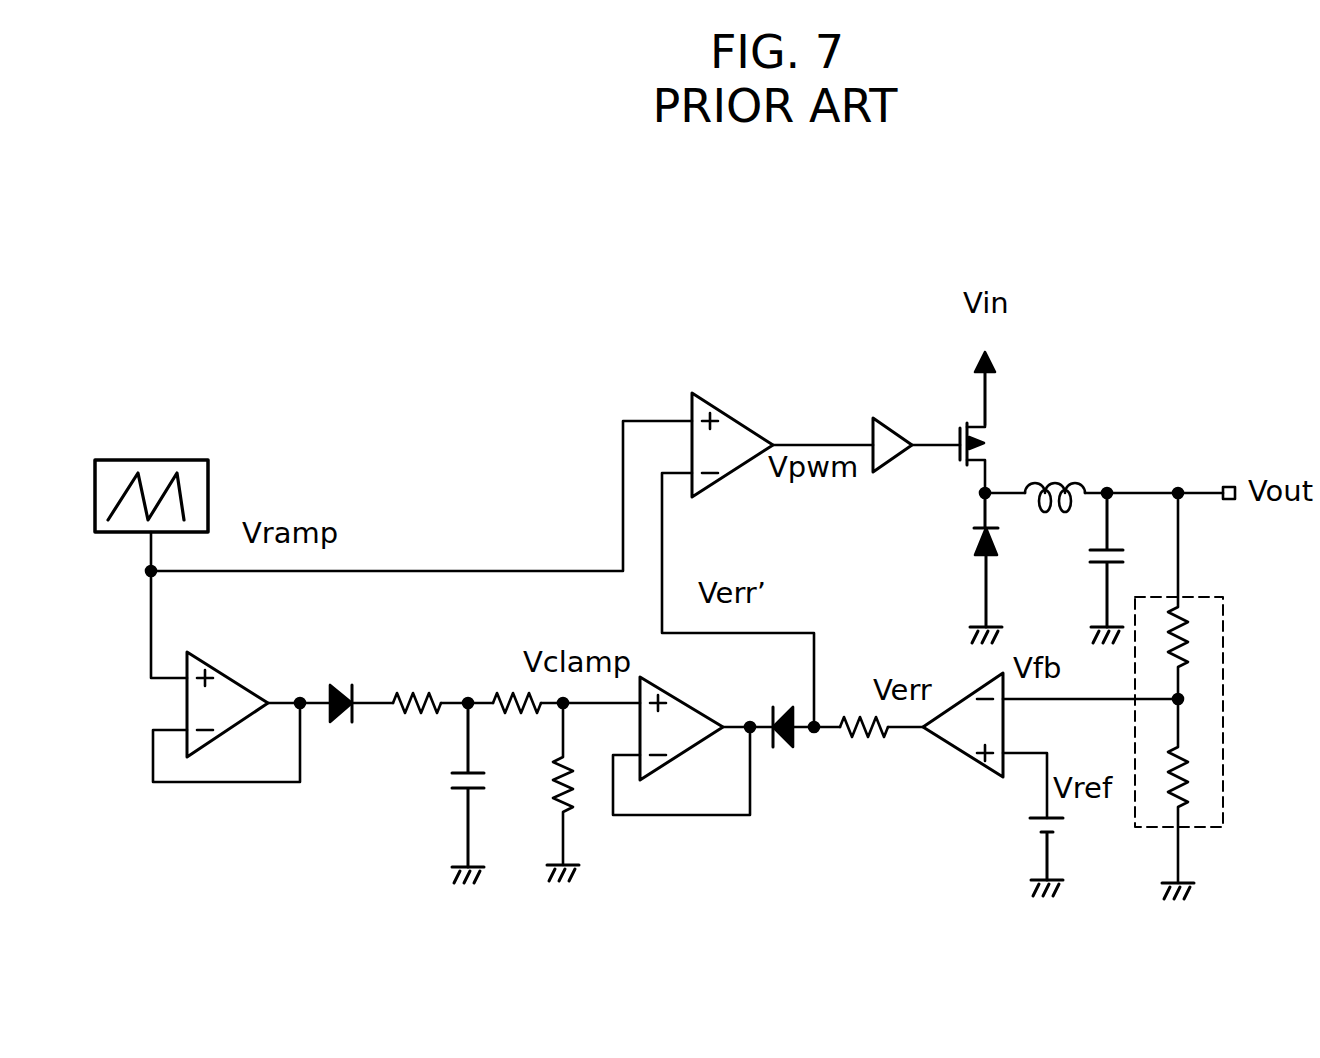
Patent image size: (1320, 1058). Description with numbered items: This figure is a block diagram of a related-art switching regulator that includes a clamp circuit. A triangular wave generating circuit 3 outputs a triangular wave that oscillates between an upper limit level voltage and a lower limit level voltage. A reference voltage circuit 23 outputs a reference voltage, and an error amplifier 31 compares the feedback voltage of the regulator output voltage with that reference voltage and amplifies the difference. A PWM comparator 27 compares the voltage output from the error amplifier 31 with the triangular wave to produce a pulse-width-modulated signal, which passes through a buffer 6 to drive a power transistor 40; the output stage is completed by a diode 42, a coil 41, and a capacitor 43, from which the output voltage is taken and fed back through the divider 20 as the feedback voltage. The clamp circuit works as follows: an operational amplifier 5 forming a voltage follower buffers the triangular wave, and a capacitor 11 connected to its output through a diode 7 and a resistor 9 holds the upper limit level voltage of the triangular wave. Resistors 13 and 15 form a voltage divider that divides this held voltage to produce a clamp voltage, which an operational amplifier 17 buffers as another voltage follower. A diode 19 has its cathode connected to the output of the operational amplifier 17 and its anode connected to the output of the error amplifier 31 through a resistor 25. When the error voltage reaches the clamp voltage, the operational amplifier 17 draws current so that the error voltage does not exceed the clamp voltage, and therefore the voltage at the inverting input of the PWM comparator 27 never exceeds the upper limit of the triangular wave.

The triangular wave generating circuit 3 is at (188, 460).
The operational amplifier 5 is at (237, 676).
The diode 7 is at (354, 682).
The resistor 9 is at (422, 725).
The capacitor 11 is at (455, 798).
The resistor 13 is at (503, 678).
The resistor 15 is at (570, 812).
The operational amplifier 17 is at (672, 768).
The diode 19 is at (780, 740).
The resistor 25 is at (858, 738).
The error amplifier 31 is at (965, 760).
The reference voltage circuit 23 is at (1030, 832).
The PWM comparator 27 is at (738, 405).
The buffer 6 is at (890, 418).
The power transistor 40 is at (993, 432).
The coil 41 is at (1065, 470).
The diode 42 is at (975, 560).
The capacitor 43 is at (1088, 572).
The feedback voltage divider 20 is at (1203, 597).